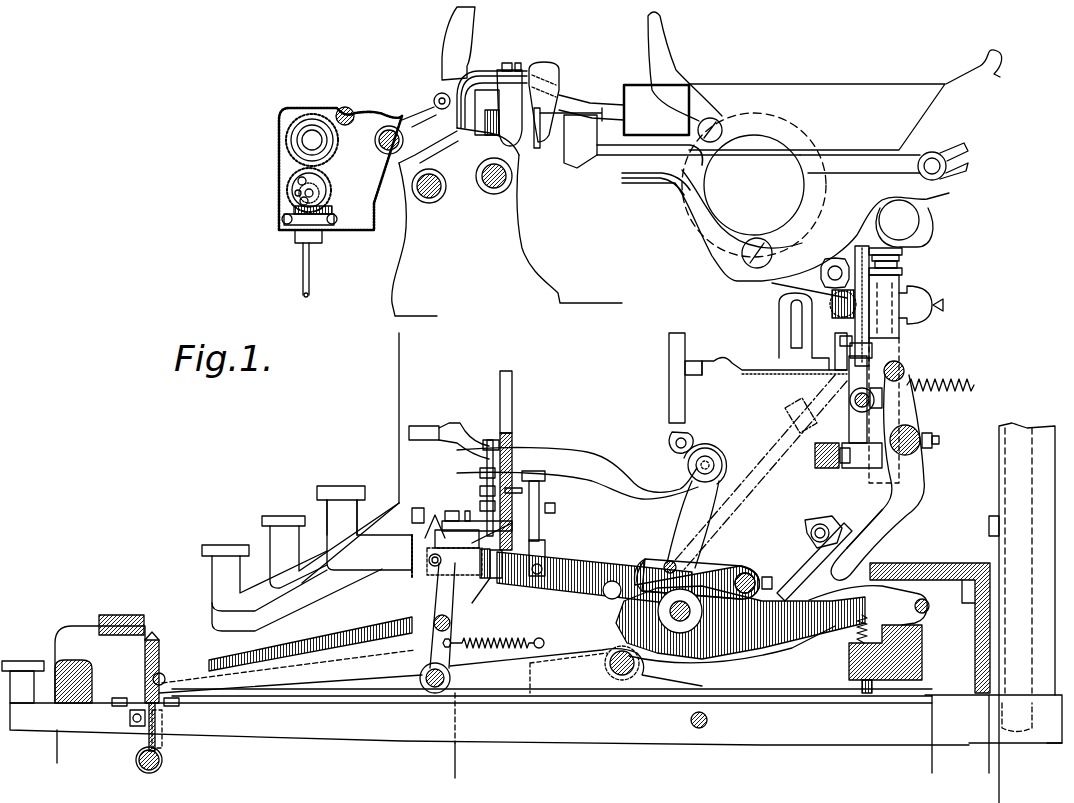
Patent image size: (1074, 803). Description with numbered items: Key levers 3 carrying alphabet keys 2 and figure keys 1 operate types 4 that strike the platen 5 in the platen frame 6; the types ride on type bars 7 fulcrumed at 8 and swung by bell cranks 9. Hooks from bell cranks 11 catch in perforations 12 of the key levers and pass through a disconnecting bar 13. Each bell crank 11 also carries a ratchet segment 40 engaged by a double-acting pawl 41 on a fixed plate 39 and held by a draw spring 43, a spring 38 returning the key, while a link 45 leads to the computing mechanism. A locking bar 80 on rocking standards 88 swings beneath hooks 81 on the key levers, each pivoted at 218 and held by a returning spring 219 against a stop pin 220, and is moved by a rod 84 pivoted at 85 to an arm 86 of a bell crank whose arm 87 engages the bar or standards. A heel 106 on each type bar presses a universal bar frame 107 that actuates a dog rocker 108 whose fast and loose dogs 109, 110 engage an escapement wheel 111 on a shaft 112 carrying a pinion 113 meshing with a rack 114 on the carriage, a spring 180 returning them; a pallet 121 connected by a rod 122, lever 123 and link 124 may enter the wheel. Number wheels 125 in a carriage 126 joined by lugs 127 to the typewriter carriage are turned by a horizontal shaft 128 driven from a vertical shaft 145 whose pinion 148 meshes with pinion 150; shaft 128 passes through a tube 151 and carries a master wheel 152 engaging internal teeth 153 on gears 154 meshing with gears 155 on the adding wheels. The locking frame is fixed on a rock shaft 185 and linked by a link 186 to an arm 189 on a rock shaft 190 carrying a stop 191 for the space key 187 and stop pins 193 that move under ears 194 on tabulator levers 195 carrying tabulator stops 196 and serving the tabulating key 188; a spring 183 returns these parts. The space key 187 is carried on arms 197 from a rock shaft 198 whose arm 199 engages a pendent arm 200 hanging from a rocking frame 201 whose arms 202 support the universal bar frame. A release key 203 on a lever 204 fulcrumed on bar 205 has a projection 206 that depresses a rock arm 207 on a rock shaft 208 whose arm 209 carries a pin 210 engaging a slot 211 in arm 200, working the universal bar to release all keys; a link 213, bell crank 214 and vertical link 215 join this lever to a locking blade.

The figure keys 1 is at (281, 516).
The alphabet keys 2 is at (222, 550).
The key levers 3 is at (333, 615).
The types 4 is at (434, 425).
The platen 5 is at (754, 190).
The platen frame 6 is at (825, 96).
The type bars 7 is at (569, 463).
The fulcrum 8 is at (702, 450).
The bell cranks 9 is at (680, 515).
The bell cranks 11 is at (491, 446).
The perforations 12 is at (487, 578).
The disconnecting bar 13 is at (506, 578).
The spring 38 is at (859, 631).
The fixed plate 39 is at (513, 402).
The segment 40 is at (480, 473).
The double-acting pawl 41 is at (480, 491).
The draw spring 43 is at (514, 469).
The link 45 is at (480, 506).
The locking bar 80 is at (452, 563).
The hooks 81 is at (410, 553).
The rod 84 is at (412, 512).
The pivot 85 is at (418, 508).
The arm 86 is at (426, 527).
The arm 87 is at (492, 522).
The rocking standards 88 is at (442, 583).
The heel 106 is at (668, 434).
The universal bar frame 107 is at (685, 394).
The dog rocker 108 is at (849, 443).
The fast dog 109 is at (905, 370).
The loose dog 110 is at (847, 373).
The escapement wheel 111 is at (917, 246).
The shaft 112 is at (938, 303).
The pinion 113 is at (832, 300).
The rack 114 is at (835, 260).
The pallet 121 is at (882, 347).
The rod 122 is at (852, 350).
The lever 123 is at (710, 533).
The link 124 is at (665, 564).
The number wheels 125 is at (279, 146).
The carriage 126 is at (350, 111).
The lugs 127 is at (415, 117).
The horizontal shaft 128 is at (320, 191).
The vertical shaft 145 is at (311, 265).
The pinion 148 is at (334, 211).
The pinion 150 is at (292, 208).
The tube 151 is at (327, 185).
The master wheel 152 is at (298, 179).
The internal teeth 153 is at (294, 189).
The gears 154 is at (299, 201).
The gears 155 is at (318, 115).
The spring 180 is at (959, 384).
The spring 183 is at (494, 643).
The rock shaft 185 is at (420, 663).
The link 186 is at (347, 633).
The space-key 187 is at (115, 611).
The tabulating key 188 is at (24, 659).
The arm 189 is at (152, 681).
The rock shaft 190 is at (163, 763).
The stop 191 is at (160, 641).
The stop pins 193 is at (164, 719).
The ears 194 is at (130, 717).
The tabulator levers 195 is at (489, 733).
The tabulator stops 196 is at (1024, 423).
The arms 197 is at (290, 671).
The rock shaft 198 is at (608, 665).
The arm 199 is at (814, 607).
The pendent arm 200 is at (908, 505).
The rocking frame 201 is at (912, 417).
The arms 202 is at (799, 404).
The release key 203 is at (338, 485).
The lever 204 is at (591, 560).
The bar 205 is at (930, 607).
The projection 206 is at (617, 580).
The rock arm 207 is at (716, 565).
The rock shaft 208 is at (750, 574).
The arm 209 is at (799, 579).
The pin 210 is at (818, 521).
The slot 211 is at (830, 533).
The link 213 is at (555, 513).
The bell crank 214 is at (545, 481).
The vertical link 215 is at (540, 499).
The pivot 218 is at (483, 601).
The returning spring 219 is at (502, 539).
The stop pin 220 is at (545, 551).